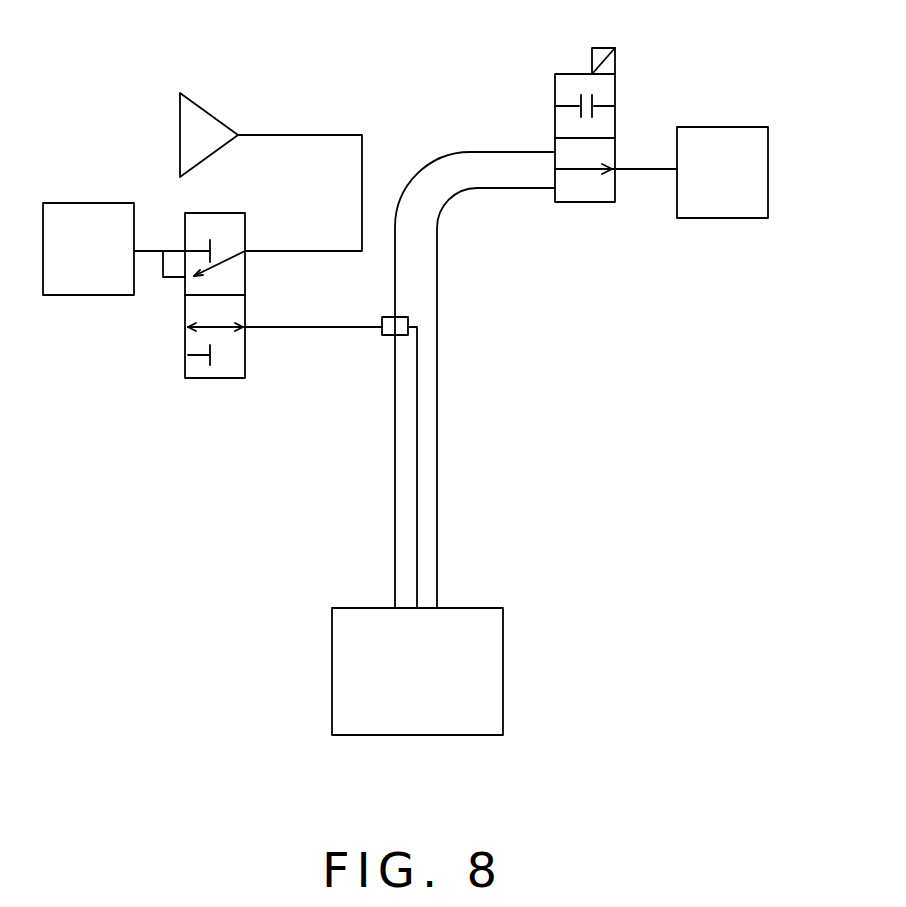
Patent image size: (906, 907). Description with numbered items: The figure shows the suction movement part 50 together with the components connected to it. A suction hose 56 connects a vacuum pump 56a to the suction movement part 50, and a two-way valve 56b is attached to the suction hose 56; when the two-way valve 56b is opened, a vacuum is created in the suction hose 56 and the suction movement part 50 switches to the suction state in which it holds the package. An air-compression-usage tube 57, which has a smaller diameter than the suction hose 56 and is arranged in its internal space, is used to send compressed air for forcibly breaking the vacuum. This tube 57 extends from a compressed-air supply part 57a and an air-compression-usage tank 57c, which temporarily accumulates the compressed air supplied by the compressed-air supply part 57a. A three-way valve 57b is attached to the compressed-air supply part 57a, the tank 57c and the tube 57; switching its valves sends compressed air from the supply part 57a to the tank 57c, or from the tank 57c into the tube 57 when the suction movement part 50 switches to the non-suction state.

The suction movement part 50 is at (505, 658).
The suction hose 56 is at (438, 478).
The vacuum pump 56a is at (728, 219).
The two-way valve 56b is at (588, 203).
The air-compression-usage tube 57 is at (417, 383).
The compressed-air supply part 57a is at (180, 135).
The three-way valve 57b is at (216, 379).
The air-compression-usage tank 57c is at (88, 296).